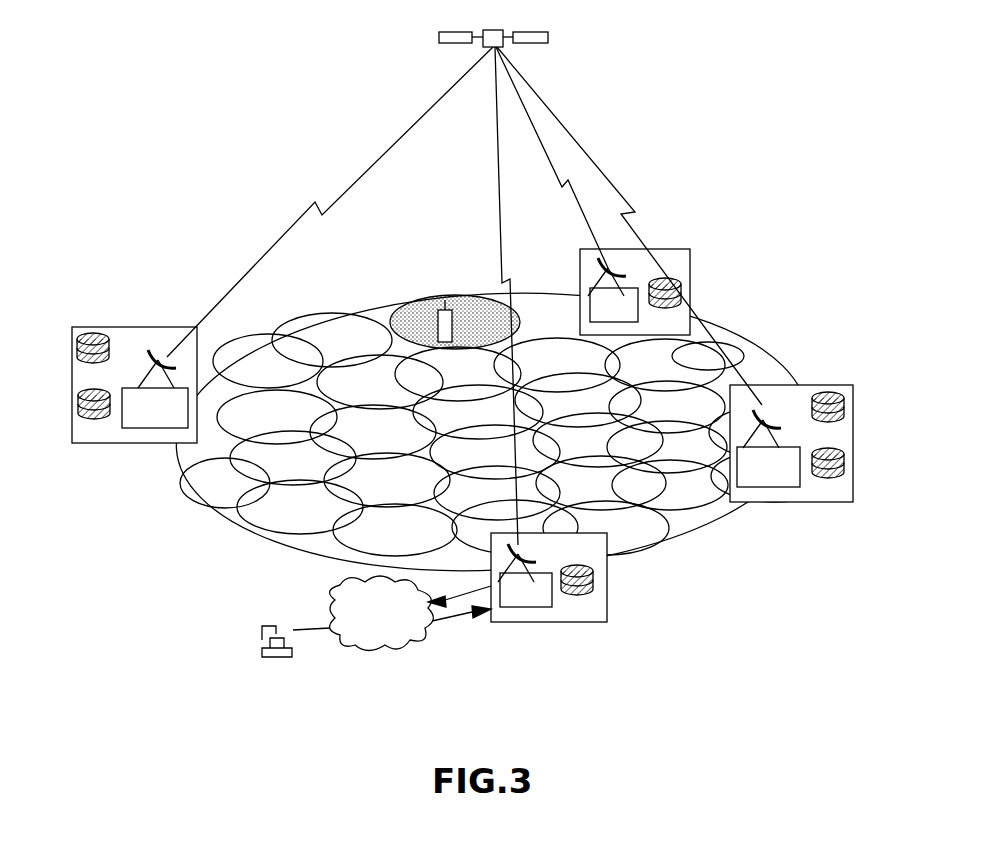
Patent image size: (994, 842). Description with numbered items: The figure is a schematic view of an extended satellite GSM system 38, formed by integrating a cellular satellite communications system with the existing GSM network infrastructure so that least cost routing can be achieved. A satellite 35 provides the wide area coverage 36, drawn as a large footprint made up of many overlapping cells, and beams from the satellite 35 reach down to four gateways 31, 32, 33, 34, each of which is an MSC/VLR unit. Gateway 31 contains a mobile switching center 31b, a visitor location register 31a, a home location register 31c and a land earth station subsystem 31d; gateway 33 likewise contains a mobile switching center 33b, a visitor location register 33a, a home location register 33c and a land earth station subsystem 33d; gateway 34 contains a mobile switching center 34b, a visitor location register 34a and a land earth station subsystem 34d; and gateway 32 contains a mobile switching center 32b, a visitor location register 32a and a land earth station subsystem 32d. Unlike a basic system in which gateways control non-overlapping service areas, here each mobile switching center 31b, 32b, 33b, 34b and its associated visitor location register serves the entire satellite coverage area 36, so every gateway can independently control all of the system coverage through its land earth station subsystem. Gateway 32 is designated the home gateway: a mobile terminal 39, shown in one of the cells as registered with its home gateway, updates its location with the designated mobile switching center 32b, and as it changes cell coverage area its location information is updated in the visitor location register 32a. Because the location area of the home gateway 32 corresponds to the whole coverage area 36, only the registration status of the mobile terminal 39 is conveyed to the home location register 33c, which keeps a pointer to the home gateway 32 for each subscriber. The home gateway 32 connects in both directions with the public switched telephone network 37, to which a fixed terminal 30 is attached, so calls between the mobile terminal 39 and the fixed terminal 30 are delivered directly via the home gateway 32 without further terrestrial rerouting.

The fixed terminal 30 is at (288, 657).
The gateway (MSC/VLR) 31 is at (108, 390).
The visitor location register 31a is at (100, 420).
The mobile switching center 31b is at (165, 428).
The home location register of gateway A 31c is at (102, 337).
The land earth station (LES) subsystem 31d is at (158, 345).
The home gateway (MSC/VLR) 32 is at (541, 604).
The visitor location register 32a is at (592, 597).
The mobile switching center 32b is at (505, 607).
The land earth station (LES) subsystem 32d is at (510, 560).
The gateway (MSC/VLR) 33 is at (802, 444).
The visitor location register 33a is at (838, 478).
The mobile switching center 33b is at (775, 487).
The home location register 33c is at (846, 402).
The land earth station (LES) subsystem 33d is at (780, 410).
The gateway (MSC/VLR) 34 is at (646, 273).
The visitor location register 34a is at (683, 290).
The mobile switching center 34b is at (590, 300).
The land earth station (LES) subsystem 34d is at (616, 270).
The satellite 35 is at (548, 37).
The satellite coverage area 36 is at (238, 523).
The public switched telephone network 37 is at (402, 652).
The extended satellite GSM system 38 is at (257, 146).
The mobile terminal 39 is at (458, 310).